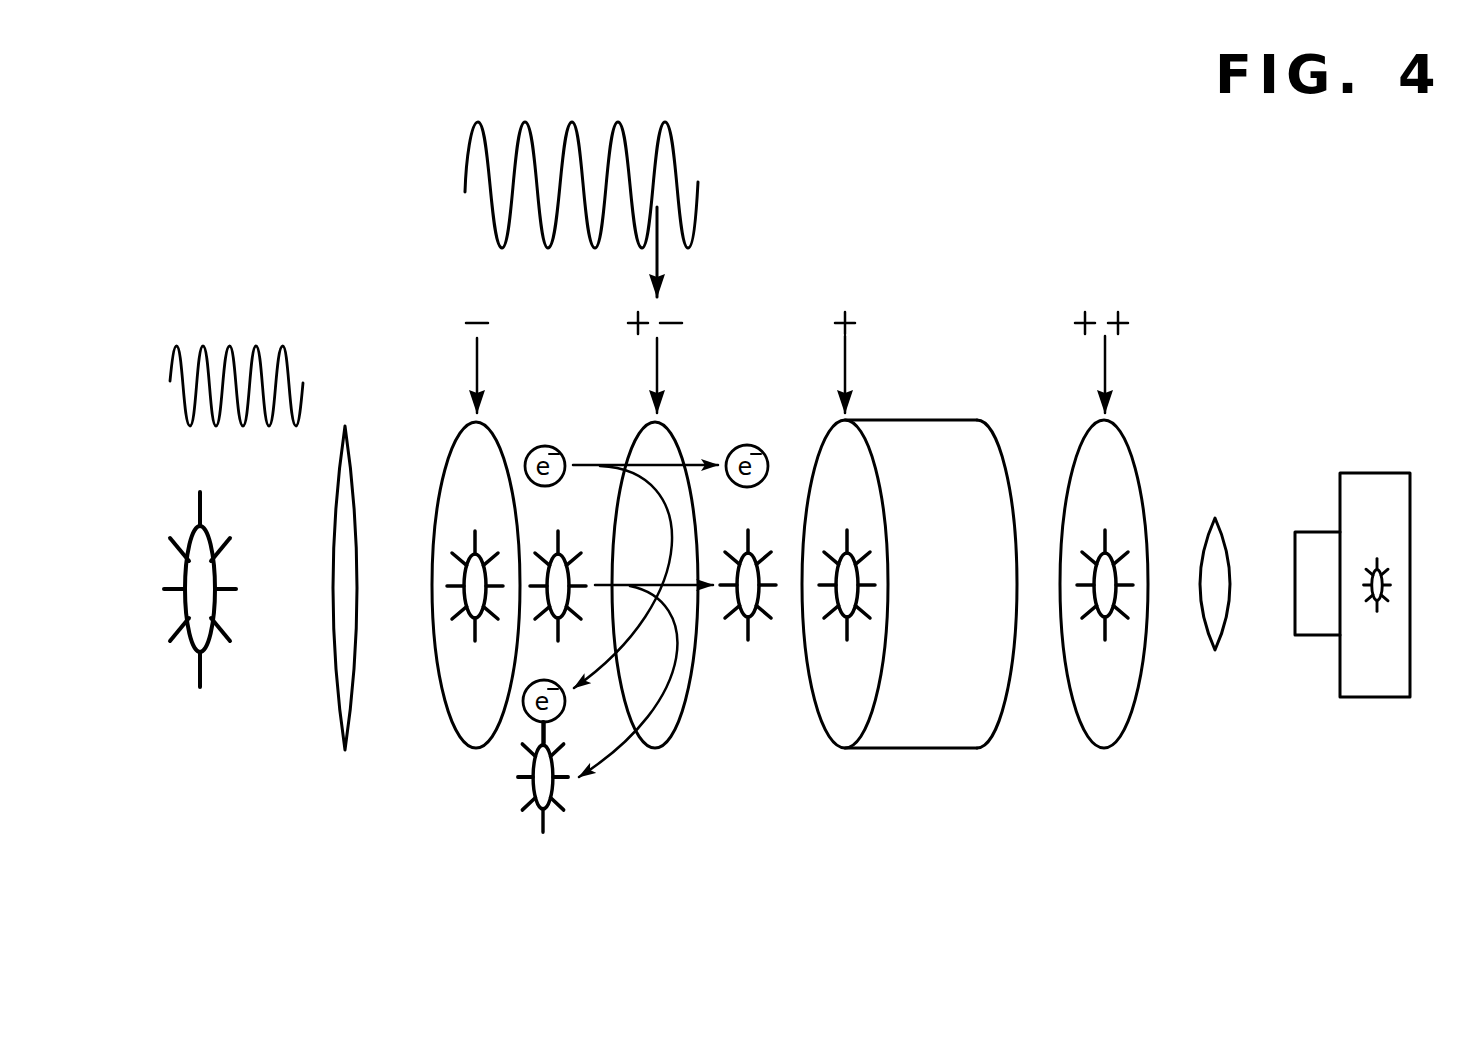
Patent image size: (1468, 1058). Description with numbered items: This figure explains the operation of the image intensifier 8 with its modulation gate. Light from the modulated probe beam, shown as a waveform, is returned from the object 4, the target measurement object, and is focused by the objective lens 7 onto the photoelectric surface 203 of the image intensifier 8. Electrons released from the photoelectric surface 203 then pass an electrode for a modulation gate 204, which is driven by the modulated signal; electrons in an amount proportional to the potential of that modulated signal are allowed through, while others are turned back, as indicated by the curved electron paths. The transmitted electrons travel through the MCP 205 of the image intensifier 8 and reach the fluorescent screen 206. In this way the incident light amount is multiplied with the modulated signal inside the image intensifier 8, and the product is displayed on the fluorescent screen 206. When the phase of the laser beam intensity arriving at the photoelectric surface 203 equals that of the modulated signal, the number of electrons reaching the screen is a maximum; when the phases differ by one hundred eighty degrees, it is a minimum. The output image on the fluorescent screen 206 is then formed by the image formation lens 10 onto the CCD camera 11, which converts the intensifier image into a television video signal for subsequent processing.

The object 4 is at (213, 689).
The objective lens 7 is at (350, 753).
The image intensifier 8 is at (888, 320).
The photoelectric surface 203 is at (475, 768).
The electrode for a modulation gate 204 is at (685, 753).
The MCP 205 is at (885, 758).
The fluorescent screen 206 is at (1118, 758).
The image formation lens 10 is at (1217, 660).
The CCD camera 11 is at (1367, 707).